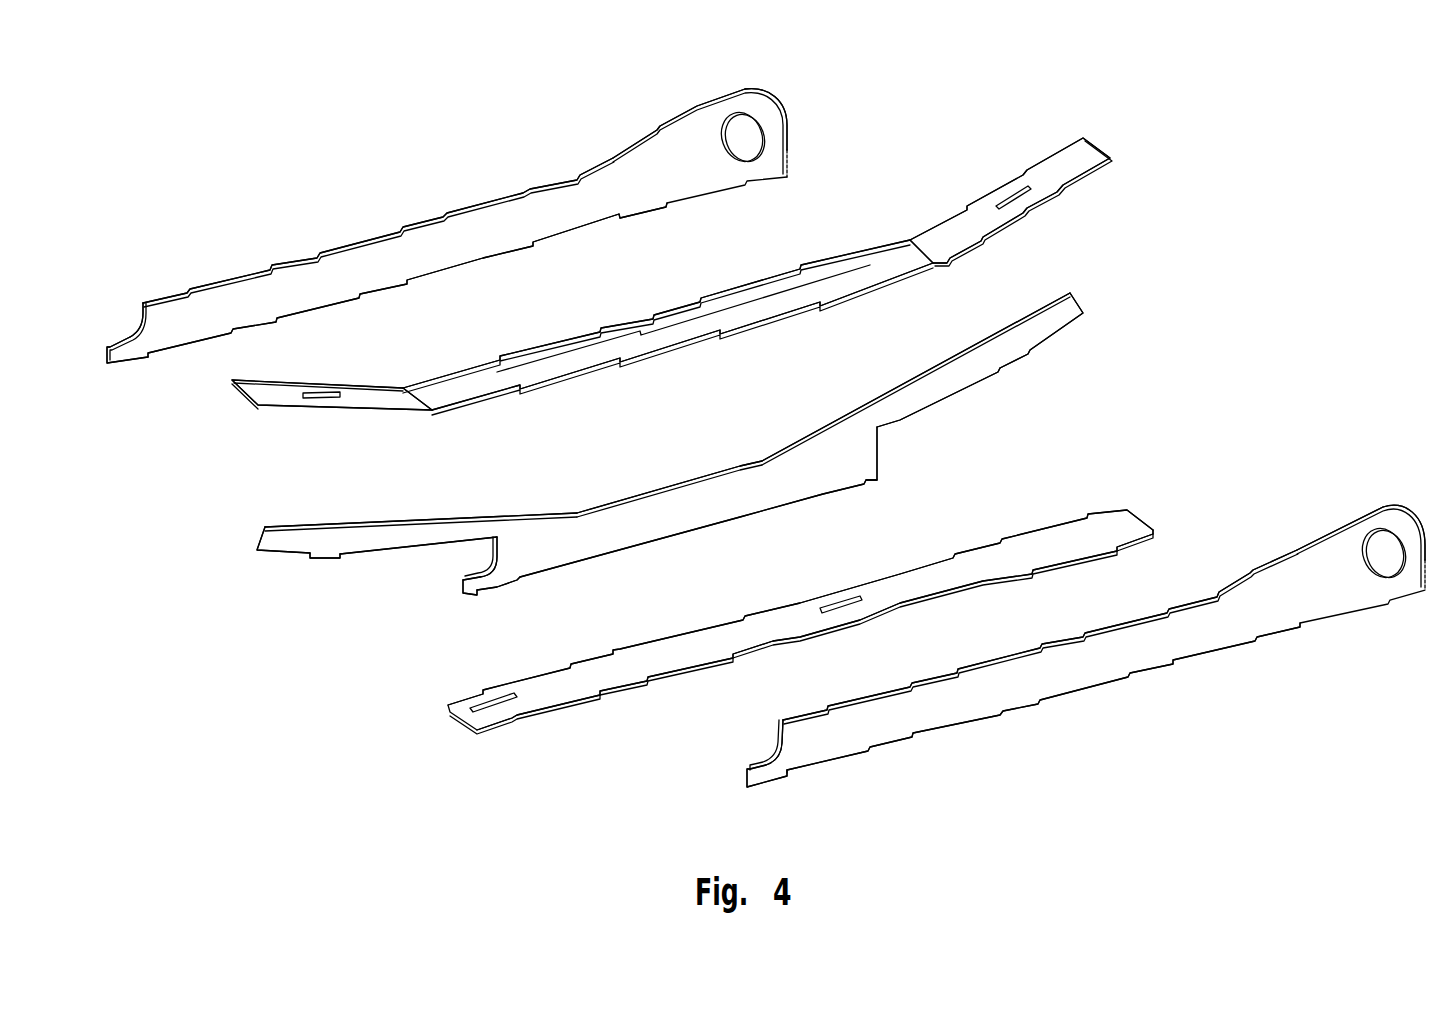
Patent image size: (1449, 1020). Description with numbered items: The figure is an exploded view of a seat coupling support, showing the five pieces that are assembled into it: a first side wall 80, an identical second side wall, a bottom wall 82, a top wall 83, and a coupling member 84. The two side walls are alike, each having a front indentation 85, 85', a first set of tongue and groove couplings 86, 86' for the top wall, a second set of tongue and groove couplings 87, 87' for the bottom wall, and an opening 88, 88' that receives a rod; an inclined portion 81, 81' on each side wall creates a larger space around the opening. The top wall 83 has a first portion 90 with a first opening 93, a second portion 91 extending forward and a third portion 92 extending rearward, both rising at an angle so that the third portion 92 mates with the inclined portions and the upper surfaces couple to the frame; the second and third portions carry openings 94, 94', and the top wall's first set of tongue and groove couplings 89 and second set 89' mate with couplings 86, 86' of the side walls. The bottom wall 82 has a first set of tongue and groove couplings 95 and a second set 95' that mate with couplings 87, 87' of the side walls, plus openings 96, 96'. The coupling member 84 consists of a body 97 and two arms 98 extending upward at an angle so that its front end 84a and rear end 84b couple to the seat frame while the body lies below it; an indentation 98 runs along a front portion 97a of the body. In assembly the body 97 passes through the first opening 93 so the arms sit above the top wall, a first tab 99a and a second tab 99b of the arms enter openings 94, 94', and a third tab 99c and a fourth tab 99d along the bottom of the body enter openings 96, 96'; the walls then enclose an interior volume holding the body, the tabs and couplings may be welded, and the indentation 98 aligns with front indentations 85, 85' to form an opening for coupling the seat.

The first side wall 80 is at (263, 223).
The inclined portion 81 is at (684, 95).
The bottom wall 82 is at (1117, 490).
The top wall 83 is at (1112, 145).
The coupling member 84 is at (1120, 307).
The front end 84a is at (257, 540).
The rear end 84b is at (1067, 287).
The front indentation 85 is at (114, 293).
The first set of tongue and groove couplings 86 is at (378, 200).
The second set of tongue and groove couplings 87 is at (407, 280).
The opening 88 is at (758, 87).
The first set of tongue and groove couplings 89 is at (656, 314).
The second set of tongue and groove couplings 89' is at (682, 339).
The first portion 90 is at (763, 290).
The second portion 91 is at (387, 397).
The third portion 92 is at (967, 223).
The first opening 93 is at (627, 337).
The opening 94 is at (357, 351).
The opening 94' is at (1000, 142).
The first set of tongue and groove couplings 95 is at (800, 607).
The second set of tongue and groove couplings 95' is at (801, 632).
The opening 96 is at (447, 747).
The opening 96' is at (892, 550).
The body 97 is at (670, 483).
The front portion 97a is at (457, 585).
The arms 98 is at (913, 407).
The first tab 99a is at (327, 560).
The second tab 99b is at (1017, 362).
The third tab 99c is at (497, 590).
The fourth tab 99d is at (847, 493).
The inclined portion 81' is at (1346, 521).
The front indentation 85' is at (724, 741).
The first set of tongue and groove couplings 86' is at (1040, 604).
The second set of tongue and groove couplings 87' is at (1043, 724).
The opening 88' is at (1370, 605).